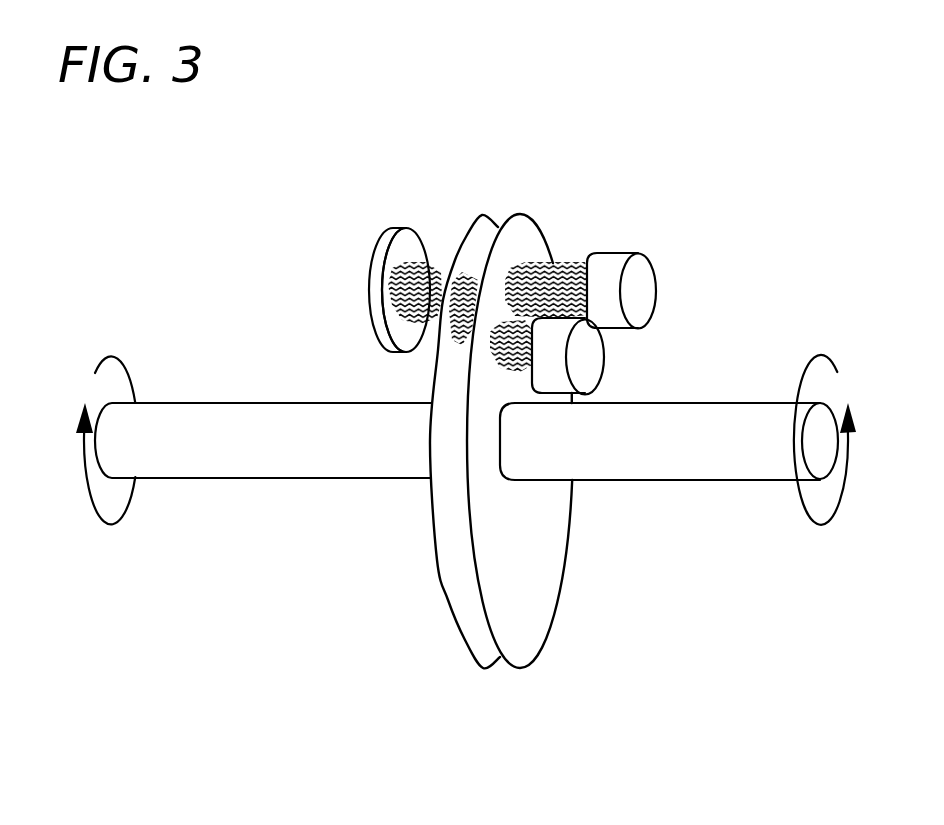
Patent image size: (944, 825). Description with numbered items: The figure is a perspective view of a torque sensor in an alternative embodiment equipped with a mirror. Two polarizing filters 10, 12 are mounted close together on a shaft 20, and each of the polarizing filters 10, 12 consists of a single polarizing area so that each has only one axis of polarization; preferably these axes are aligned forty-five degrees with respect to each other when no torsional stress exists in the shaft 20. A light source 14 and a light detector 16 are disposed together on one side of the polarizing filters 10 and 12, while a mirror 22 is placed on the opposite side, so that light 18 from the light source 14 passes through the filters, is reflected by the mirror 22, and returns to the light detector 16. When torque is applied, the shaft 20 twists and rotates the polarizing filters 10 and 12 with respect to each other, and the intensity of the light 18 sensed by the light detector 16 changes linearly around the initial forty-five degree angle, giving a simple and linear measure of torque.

The polarizing filter 10 is at (430, 503).
The polarizing filter 12 is at (537, 568).
The light source 14 is at (642, 297).
The light detector 16 is at (590, 372).
The light 18 is at (567, 266).
The shaft 20 is at (698, 454).
The mirror 22 is at (368, 295).